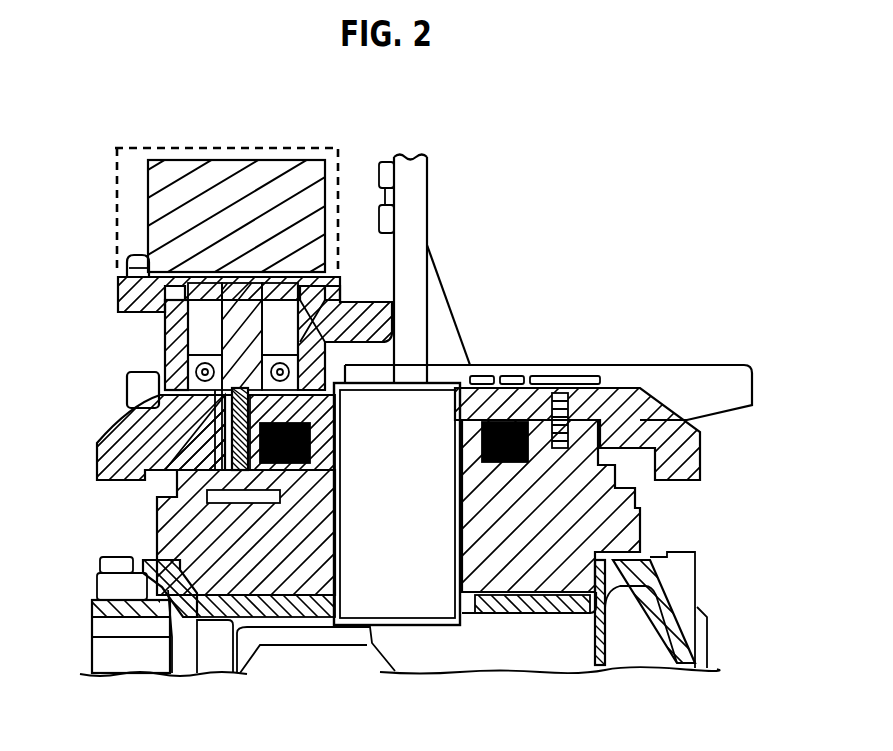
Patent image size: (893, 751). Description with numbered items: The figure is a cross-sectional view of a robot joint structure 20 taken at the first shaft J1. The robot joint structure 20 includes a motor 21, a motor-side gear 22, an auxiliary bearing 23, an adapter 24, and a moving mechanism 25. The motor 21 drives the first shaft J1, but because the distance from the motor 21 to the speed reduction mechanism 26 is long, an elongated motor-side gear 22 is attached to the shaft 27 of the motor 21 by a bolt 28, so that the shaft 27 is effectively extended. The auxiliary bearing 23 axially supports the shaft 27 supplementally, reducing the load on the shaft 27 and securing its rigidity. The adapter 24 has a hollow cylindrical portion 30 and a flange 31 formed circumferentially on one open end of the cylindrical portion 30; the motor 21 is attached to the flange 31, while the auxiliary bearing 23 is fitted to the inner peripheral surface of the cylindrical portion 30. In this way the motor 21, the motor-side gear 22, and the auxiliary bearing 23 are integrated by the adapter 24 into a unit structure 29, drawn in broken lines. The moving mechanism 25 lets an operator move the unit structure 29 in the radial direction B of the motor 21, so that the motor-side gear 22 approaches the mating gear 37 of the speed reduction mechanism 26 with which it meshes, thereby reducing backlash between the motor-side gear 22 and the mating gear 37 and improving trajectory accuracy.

The robot joint structure 20 is at (664, 128).
The motor 21 is at (200, 190).
The motor-side gear 22 is at (150, 449).
The auxiliary bearing 23 is at (190, 363).
The adapter 24 is at (320, 293).
The moving mechanism 25 is at (133, 253).
The speed reduction mechanism 26 is at (180, 521).
The shaft 27 is at (290, 331).
The bolt 28 is at (190, 419).
The unit structure 29 is at (311, 146).
The cylindrical portion 30 is at (168, 333).
The flange 31 is at (140, 292).
The mating gear 37 is at (282, 470).
The radial direction B is at (243, 497).
The first shaft J1 is at (662, 516).